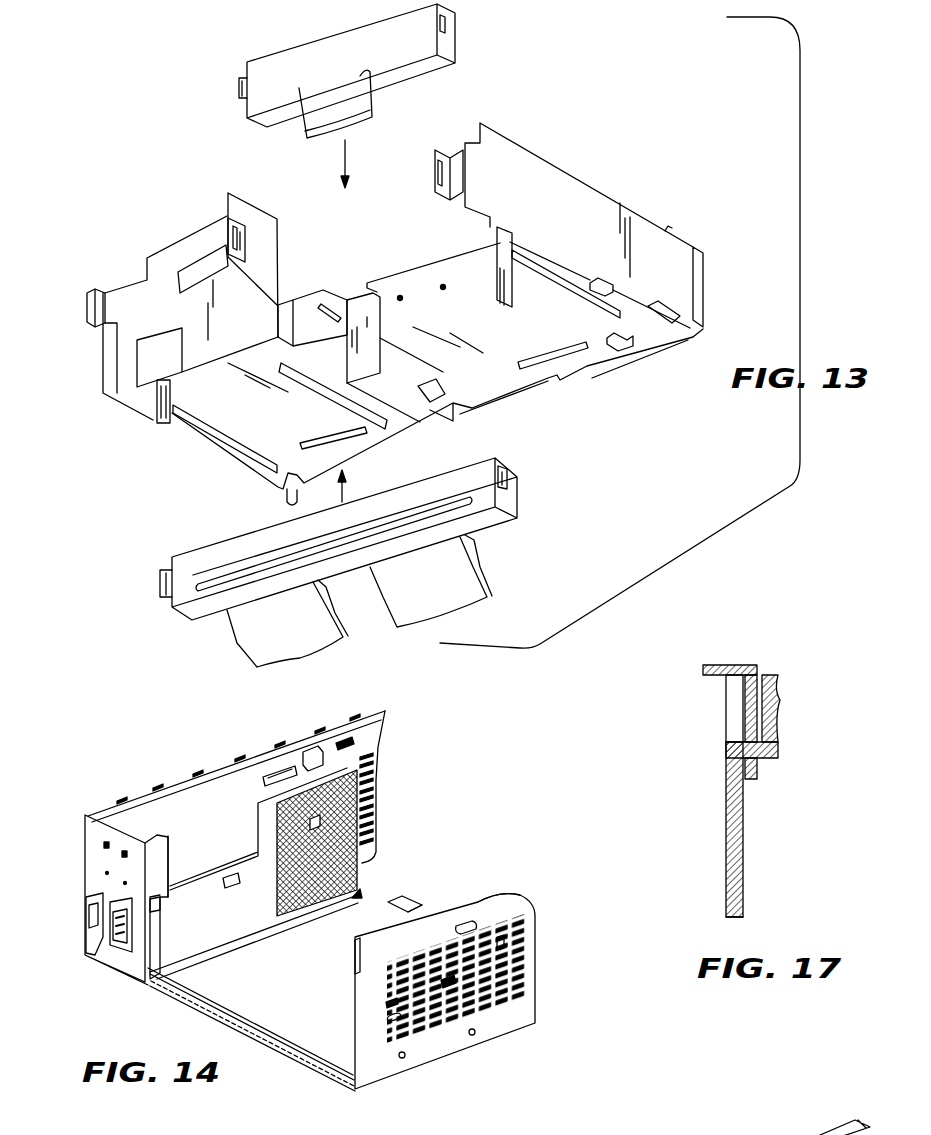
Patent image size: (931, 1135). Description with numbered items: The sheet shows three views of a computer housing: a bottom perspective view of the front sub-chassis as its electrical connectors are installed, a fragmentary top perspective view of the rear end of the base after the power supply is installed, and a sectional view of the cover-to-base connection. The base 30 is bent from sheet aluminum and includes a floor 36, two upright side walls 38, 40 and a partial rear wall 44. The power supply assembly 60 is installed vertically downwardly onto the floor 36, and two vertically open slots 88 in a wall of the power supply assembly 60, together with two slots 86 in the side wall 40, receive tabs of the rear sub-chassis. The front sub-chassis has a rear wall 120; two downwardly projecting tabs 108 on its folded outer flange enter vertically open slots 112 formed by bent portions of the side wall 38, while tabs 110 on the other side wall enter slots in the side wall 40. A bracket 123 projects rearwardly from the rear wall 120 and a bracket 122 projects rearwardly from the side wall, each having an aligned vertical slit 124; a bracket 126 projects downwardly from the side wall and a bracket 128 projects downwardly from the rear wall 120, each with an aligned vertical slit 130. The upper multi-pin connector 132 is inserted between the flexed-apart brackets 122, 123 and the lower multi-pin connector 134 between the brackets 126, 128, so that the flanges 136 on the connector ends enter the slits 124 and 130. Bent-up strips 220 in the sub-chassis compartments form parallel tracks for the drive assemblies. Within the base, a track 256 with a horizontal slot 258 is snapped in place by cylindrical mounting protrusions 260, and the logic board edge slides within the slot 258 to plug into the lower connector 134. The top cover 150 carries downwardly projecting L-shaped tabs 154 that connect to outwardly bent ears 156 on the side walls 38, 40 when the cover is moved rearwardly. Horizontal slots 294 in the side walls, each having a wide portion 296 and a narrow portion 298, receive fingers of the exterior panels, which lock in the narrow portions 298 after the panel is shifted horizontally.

In FIG. 14, the base 30 is at (86, 814).
In FIG. 17, the base 30 is at (744, 883).
In FIG. 14, the floor 36 is at (270, 994).
In FIG. 14, the side wall 38 is at (338, 733).
In FIG. 17, the side wall 38 is at (726, 825).
In FIG. 14, the side wall 40 is at (537, 917).
In FIG. 14, the partial rear wall 44 is at (115, 865).
In FIG. 14, the power supply assembly 60 is at (213, 772).
In FIG. 14, the slots 86 is at (443, 990).
In FIG. 14, the slots 88 is at (237, 890).
In FIG. 13, the tabs 108 is at (90, 330).
In FIG. 13, the tabs 110 is at (492, 219).
In FIG. 14, the slots 112 is at (379, 742).
In FIG. 13, the rear wall 120 is at (216, 243).
In FIG. 13, the bracket 122 is at (455, 152).
In FIG. 13, the bracket 123 is at (241, 238).
In FIG. 13, the slit 124 is at (238, 232).
In FIG. 13, the bracket 126 is at (503, 244).
In FIG. 13, the bracket 128 is at (157, 420).
In FIG. 13, the slit 130 is at (556, 357).
In FIG. 13, the upper multi-pin connector 132 is at (457, 40).
In FIG. 13, the lower multi-pin connector 134 is at (517, 510).
In FIG. 13, the flanges 136 is at (240, 88).
In FIG. 17, the top cover 150 is at (747, 665).
In FIG. 17, the L-shaped tabs 154 is at (757, 776).
In FIG. 14, the outwardly bent ears 156 is at (354, 976).
In FIG. 17, the outwardly bent ears 156 is at (778, 732).
In FIG. 13, the bent-up strips 220 is at (615, 238).
In FIG. 14, the track 256 is at (396, 898).
In FIG. 14, the horizontal slot 258 is at (420, 903).
In FIG. 17, the cylindrical mounting protrusions 260 is at (818, 1132).
In FIG. 14, the horizontal slots 294 is at (400, 1021).
In FIG. 14, the wide portion 296 is at (519, 894).
In FIG. 14, the narrow portion 298 is at (472, 923).